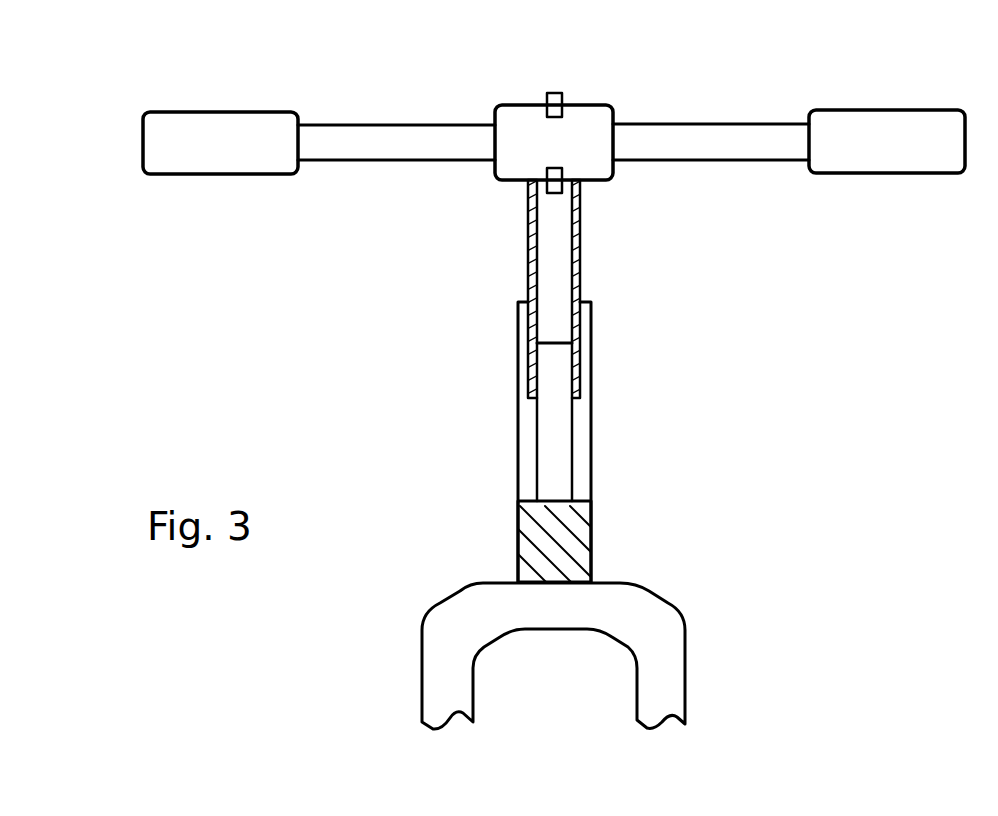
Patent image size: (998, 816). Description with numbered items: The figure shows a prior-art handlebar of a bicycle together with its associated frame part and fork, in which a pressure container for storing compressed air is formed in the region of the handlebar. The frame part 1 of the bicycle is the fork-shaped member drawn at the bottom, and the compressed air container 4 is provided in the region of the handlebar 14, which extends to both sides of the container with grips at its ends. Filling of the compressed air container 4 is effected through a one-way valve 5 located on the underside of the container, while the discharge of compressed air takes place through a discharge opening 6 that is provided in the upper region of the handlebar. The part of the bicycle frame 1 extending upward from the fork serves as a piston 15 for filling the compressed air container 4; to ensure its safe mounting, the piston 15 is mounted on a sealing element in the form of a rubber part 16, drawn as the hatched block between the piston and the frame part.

The frame part 1 is at (708, 602).
The compressed air container 4 is at (587, 128).
The one-way valve 5 is at (555, 185).
The discharge opening 6 is at (552, 100).
The handlebar 14 is at (370, 143).
The piston 15 is at (552, 433).
The rubber part 16 is at (560, 542).